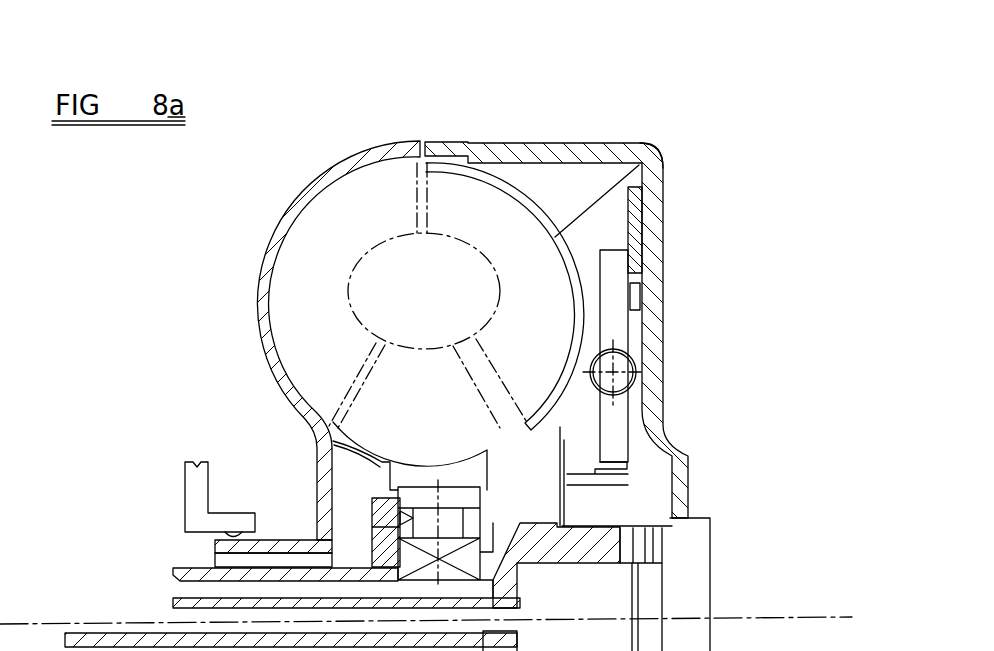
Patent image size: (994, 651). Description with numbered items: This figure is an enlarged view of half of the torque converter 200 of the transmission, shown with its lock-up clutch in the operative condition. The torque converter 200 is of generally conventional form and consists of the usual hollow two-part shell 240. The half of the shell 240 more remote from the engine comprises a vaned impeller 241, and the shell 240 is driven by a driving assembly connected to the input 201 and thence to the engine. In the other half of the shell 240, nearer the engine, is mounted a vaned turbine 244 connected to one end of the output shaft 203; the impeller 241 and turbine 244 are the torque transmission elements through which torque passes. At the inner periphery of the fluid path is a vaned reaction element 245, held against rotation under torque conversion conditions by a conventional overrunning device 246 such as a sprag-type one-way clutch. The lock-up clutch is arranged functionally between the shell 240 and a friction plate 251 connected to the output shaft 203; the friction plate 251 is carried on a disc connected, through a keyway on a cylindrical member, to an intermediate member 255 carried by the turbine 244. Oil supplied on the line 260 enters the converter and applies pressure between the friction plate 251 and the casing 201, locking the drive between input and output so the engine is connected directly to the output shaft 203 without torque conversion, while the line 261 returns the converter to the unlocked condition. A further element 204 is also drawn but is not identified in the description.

The torque converter 200 is at (514, 109).
The shell 240 is at (552, 147).
The vaned turbine 244 is at (652, 150).
The vaned impeller 241 is at (325, 230).
The friction plate 251 is at (655, 232).
The input 201 is at (664, 262).
The vaned reaction element 245 is at (373, 397).
The bracket 204 is at (187, 478).
The overrunning device 246 is at (417, 507).
The line 260 is at (213, 548).
The output shaft 203 is at (160, 595).
The intermediate member 255 is at (562, 441).
The line 261 is at (175, 632).